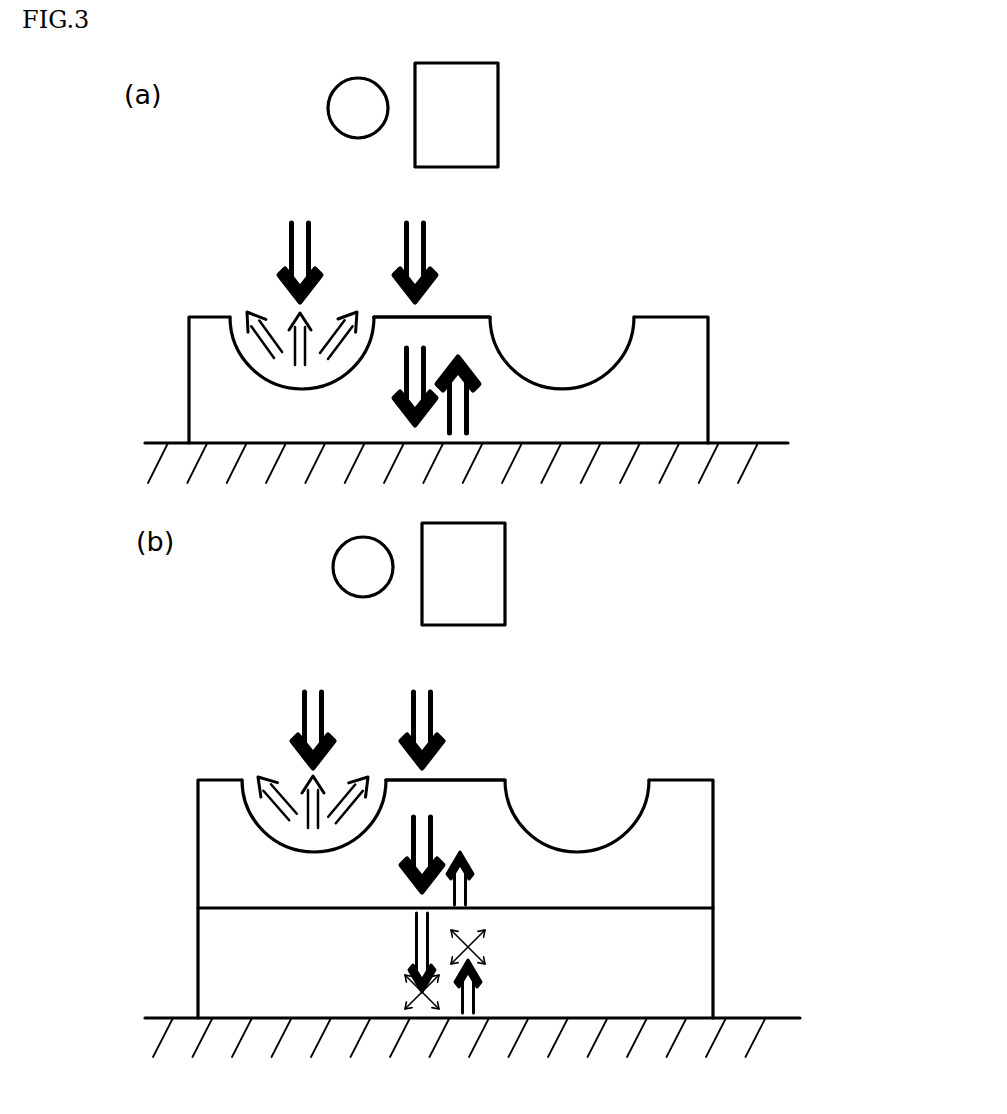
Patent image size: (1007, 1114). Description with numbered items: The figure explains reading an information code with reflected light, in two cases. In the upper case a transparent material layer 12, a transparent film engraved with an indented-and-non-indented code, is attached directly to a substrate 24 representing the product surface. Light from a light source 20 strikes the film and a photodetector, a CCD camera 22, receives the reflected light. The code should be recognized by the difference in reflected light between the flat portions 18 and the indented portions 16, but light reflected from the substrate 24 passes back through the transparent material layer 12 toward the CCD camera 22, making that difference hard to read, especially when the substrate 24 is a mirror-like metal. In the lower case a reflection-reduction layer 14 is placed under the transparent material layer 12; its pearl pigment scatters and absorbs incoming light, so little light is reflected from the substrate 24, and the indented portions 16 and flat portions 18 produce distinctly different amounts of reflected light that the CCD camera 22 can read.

The transparent material layer 12 is at (693, 379).
The reflection-reduction layer 14 is at (687, 959).
The indented portions 16 is at (256, 358).
The flat portions 18 is at (455, 317).
The light source 20 is at (337, 104).
The CCD camera 22 is at (478, 122).
The substrate 24 is at (765, 469).